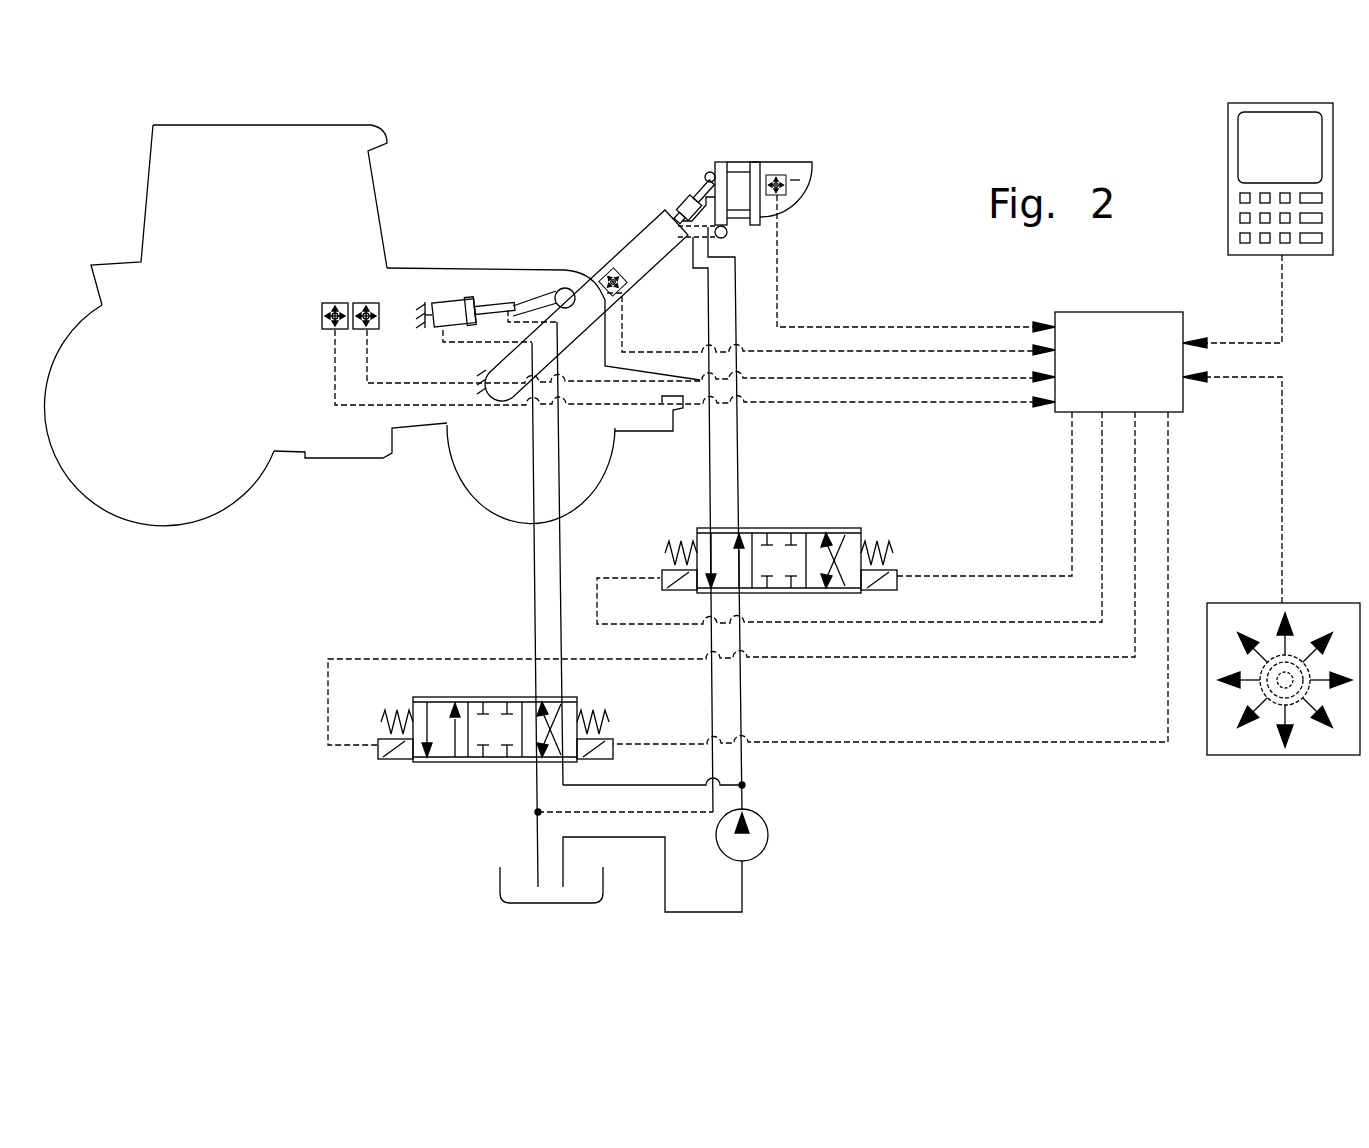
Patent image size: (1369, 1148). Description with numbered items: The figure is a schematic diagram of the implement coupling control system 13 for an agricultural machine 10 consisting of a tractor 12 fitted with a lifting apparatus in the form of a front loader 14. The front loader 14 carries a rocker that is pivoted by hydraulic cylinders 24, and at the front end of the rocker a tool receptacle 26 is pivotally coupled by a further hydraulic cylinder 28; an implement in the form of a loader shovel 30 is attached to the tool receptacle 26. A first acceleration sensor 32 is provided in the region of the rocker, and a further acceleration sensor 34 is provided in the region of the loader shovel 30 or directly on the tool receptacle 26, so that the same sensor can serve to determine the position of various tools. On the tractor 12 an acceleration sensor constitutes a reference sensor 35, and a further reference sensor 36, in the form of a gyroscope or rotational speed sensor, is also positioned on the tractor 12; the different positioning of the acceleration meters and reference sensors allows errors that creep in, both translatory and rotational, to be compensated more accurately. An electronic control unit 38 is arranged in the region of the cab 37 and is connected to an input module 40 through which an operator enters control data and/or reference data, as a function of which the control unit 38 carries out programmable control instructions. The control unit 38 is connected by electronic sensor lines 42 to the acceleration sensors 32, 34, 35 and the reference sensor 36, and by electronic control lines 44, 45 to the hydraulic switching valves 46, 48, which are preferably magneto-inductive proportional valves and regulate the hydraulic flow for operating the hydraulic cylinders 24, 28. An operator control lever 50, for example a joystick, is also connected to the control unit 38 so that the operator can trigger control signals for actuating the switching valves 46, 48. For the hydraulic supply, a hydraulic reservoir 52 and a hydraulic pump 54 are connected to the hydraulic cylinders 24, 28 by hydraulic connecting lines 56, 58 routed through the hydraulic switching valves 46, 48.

The agricultural machine 10 is at (526, 173).
The tractor 12 is at (340, 418).
The implement coupling control system 13 is at (912, 791).
The front loader 14 is at (628, 247).
The hydraulic cylinders 24 is at (527, 295).
The tool receptacle 26 is at (745, 160).
The further hydraulic cylinder 28 is at (680, 205).
The loader shovel 30 is at (807, 180).
The first acceleration sensor 32 is at (605, 270).
The further acceleration sensor 34 is at (769, 172).
The reference sensor 35 is at (380, 302).
The further reference sensor 36 is at (322, 312).
The operator cab 37 is at (300, 160).
The electronic control unit 38 is at (1117, 312).
The input module 40 is at (1227, 172).
The electronic sensor lines 42 is at (898, 402).
The electronic control lines 44 is at (1135, 540).
The electronic control lines 45 is at (1102, 518).
The hydraulic switching valve 46 is at (480, 758).
The hydraulic switching valve 48 is at (828, 528).
The operator control lever 50 is at (1270, 757).
The hydraulic reservoir 52 is at (500, 885).
The hydraulic pump 54 is at (768, 835).
The hydraulic connecting lines 56 is at (532, 470).
The hydraulic connecting lines 58 is at (710, 460).